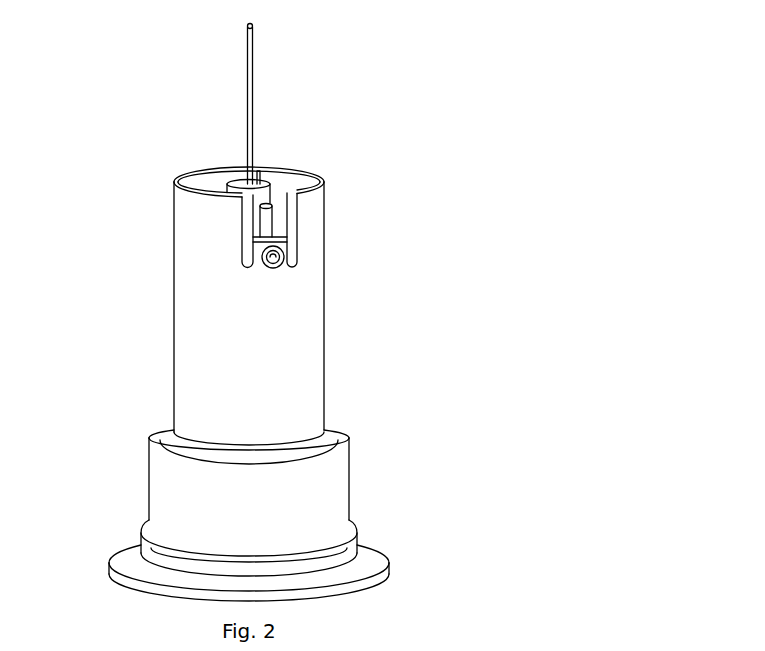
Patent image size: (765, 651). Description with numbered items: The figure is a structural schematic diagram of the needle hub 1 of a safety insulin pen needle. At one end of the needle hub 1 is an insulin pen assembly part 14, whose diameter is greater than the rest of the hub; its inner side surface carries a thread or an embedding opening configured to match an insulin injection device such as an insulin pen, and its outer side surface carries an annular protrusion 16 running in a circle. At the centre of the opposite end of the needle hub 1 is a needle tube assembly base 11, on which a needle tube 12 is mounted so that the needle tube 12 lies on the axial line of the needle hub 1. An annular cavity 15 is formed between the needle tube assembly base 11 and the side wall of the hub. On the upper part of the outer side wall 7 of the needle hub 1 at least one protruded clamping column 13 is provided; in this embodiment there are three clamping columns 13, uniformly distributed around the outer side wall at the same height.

The needle hub 1 is at (261, 235).
The outer side wall 7 is at (228, 287).
The needle tube assembly base 11 is at (258, 211).
The needle tube 12 is at (253, 101).
The clamping column 13 is at (284, 255).
The insulin pen assembly part 14 is at (287, 508).
The annular cavity 15 is at (280, 207).
The annular protrusion 16 is at (172, 548).